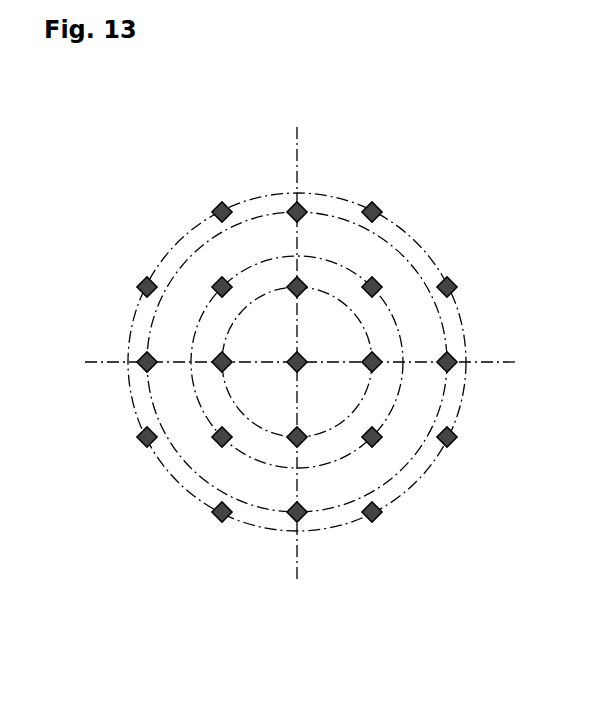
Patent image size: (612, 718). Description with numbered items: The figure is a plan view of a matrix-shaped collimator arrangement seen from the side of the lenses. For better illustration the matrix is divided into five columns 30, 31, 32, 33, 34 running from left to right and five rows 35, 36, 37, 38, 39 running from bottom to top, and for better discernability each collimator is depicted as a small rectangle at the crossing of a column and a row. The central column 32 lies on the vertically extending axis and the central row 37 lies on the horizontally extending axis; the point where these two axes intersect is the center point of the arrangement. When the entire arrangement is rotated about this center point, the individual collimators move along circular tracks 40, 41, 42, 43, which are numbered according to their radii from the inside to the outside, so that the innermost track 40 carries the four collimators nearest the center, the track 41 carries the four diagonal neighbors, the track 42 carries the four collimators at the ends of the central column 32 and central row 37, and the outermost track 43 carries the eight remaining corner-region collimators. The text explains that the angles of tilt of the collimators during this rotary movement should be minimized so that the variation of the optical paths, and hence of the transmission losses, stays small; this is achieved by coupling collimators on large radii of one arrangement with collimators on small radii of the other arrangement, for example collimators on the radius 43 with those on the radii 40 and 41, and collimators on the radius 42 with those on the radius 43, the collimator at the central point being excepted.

The column 30 is at (156, 443).
The column 31 is at (231, 406).
The column 32 is at (306, 368).
The column 33 is at (381, 406).
The column 34 is at (456, 443).
The row 35 is at (220, 505).
The row 36 is at (257, 432).
The row 37 is at (288, 360).
The row 38 is at (257, 291).
The row 39 is at (220, 220).
The circular track 40 is at (297, 362).
The circular track 41 is at (297, 362).
The circular track 42 is at (297, 362).
The circular track 43 is at (297, 356).